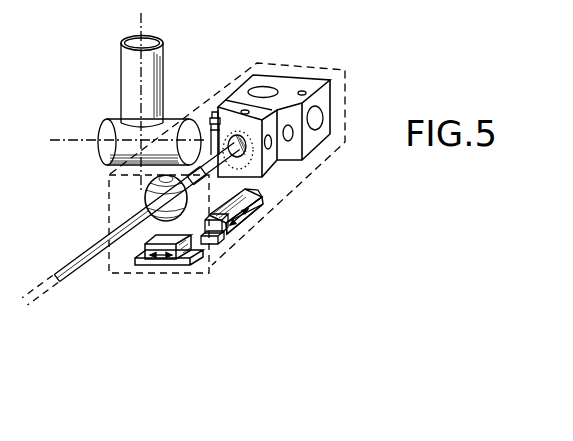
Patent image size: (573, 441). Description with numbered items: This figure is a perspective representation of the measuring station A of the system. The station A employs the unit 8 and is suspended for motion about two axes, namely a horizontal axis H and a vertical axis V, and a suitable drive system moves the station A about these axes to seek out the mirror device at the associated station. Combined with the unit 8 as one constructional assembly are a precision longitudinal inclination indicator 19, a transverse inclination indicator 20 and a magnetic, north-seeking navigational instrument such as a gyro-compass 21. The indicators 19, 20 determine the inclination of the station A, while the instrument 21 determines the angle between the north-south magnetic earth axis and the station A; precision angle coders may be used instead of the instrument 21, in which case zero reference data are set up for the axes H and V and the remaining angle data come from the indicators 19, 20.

The unit 8 is at (150, 185).
The precision longitudinal inclination indicator 19 is at (250, 215).
The transverse inclination indicator 20 is at (161, 266).
The gyro-compass 21 is at (325, 111).
The station A is at (282, 63).
The vertical axis V is at (138, 25).
The horizontal axis H is at (58, 138).